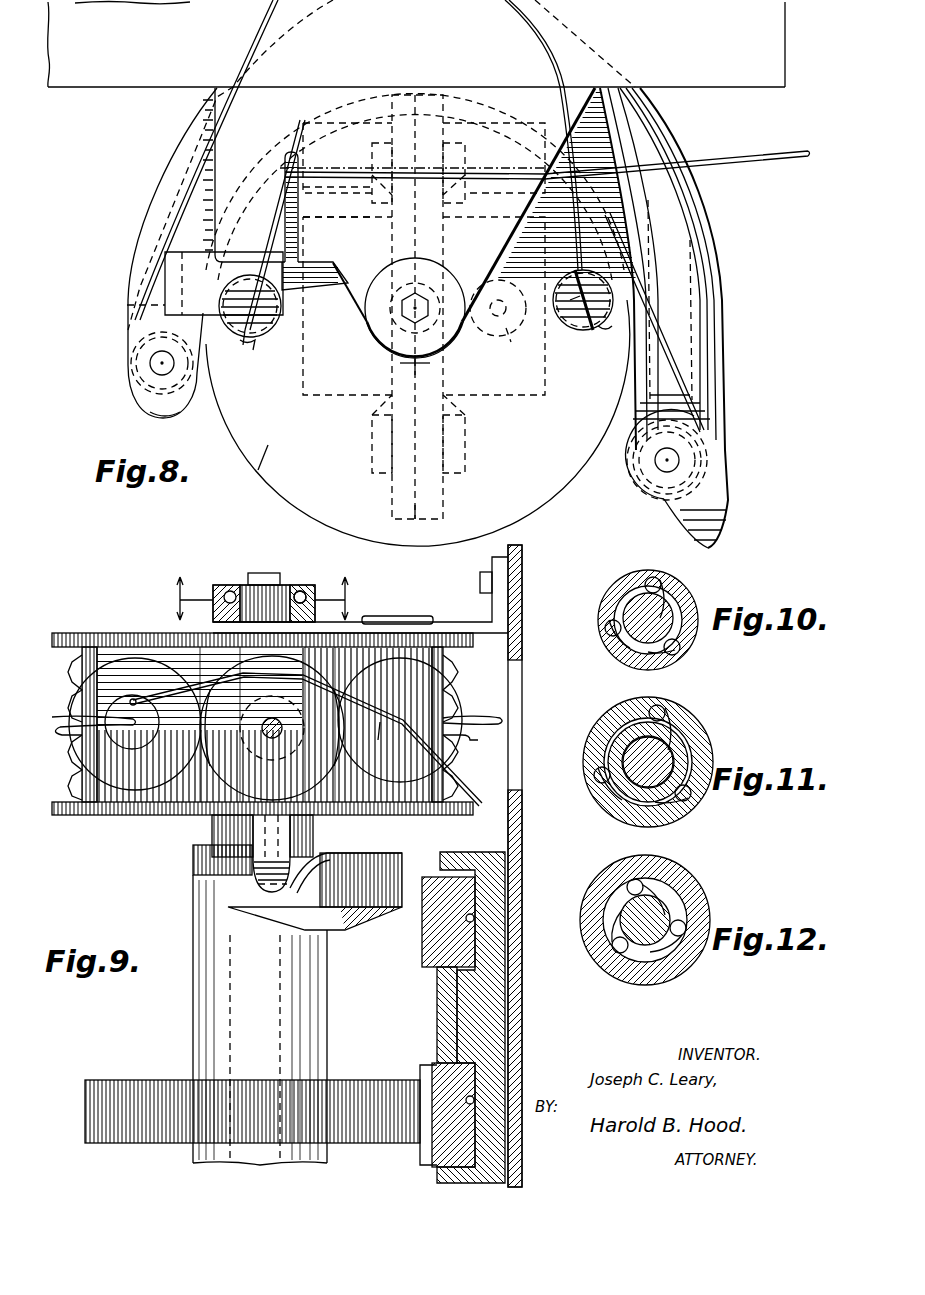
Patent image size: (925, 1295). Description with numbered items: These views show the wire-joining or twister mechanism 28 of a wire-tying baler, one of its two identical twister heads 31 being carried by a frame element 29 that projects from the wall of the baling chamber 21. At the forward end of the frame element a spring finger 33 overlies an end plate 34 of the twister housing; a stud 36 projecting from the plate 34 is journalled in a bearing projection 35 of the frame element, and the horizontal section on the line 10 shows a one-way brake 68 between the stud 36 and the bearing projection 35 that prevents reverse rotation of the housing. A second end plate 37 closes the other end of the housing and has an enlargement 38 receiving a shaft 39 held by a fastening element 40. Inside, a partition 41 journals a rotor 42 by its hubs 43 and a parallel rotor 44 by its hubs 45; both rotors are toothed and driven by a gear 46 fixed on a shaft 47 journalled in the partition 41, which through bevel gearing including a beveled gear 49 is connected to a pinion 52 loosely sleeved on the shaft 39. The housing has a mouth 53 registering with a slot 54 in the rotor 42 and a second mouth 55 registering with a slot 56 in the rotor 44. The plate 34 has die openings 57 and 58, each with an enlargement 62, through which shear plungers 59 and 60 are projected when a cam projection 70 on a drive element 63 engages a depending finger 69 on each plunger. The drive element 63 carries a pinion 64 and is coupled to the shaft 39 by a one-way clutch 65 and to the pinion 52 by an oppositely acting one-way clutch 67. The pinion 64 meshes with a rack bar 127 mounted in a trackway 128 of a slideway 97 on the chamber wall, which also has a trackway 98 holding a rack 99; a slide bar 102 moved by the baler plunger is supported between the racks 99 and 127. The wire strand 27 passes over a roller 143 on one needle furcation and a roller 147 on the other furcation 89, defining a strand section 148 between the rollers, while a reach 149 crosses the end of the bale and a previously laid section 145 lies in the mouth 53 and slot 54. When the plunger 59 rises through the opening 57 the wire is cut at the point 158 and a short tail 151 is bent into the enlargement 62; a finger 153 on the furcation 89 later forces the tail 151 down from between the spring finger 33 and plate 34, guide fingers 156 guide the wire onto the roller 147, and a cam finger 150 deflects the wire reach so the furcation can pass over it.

In FIG. 9, the section line 10 is at (262, 598).
In FIG. 8, the baling chamber 21 is at (782, 38).
In FIG. 9, the baling chamber 21 is at (523, 597).
In FIG. 8, the wire strand 27 is at (540, 50).
In FIG. 8, the wire-joining mechanism 28 is at (575, 474).
In FIG. 9, the wire-joining mechanism 28 is at (57, 596).
In FIG. 8, the frame element 29 is at (590, 122).
In FIG. 9, the frame element 29 is at (414, 615).
In FIG. 9, the twister head 31 is at (48, 804).
In FIG. 8, the spring finger 33 is at (214, 216).
In FIG. 8, the end plate 34 is at (255, 467).
In FIG. 9, the end plate 34 is at (128, 632).
In FIG. 8, the bearing projection 35 is at (415, 375).
In FIG. 9, the bearing projection 35 is at (215, 606).
In FIG. 10, the bearing projection 35 is at (692, 607).
In FIG. 8, the stud 36 is at (415, 258).
In FIG. 9, the stud 36 is at (280, 590).
In FIG. 10, the stud 36 is at (638, 598).
In FIG. 9, the second end plate 37 is at (140, 815).
In FIG. 9, the enlargement 38 is at (312, 828).
In FIG. 11, the shaft 39 is at (634, 748).
In FIG. 12, the shaft 39 is at (662, 942).
In FIG. 8, the fastening element 40 is at (482, 268).
In FIG. 8, the partition 41 is at (365, 244).
In FIG. 8, the rotor 42 is at (412, 94).
In FIG. 9, the rotor 42 is at (458, 700).
In FIG. 8, the hubs 43 is at (463, 154).
In FIG. 8, the rotor 44 is at (419, 520).
In FIG. 9, the rotor 44 is at (70, 690).
In FIG. 8, the hubs 45 is at (465, 456).
In FIG. 8, the gear 46 is at (400, 363).
In FIG. 9, the gear 46 is at (220, 781).
In FIG. 8, the shaft 47 is at (366, 318).
In FIG. 8, the beveled gear 49 is at (509, 346).
In FIG. 9, the pinion 52 is at (210, 857).
In FIG. 11, the pinion 52 is at (636, 735).
In FIG. 9, the mouth 53 is at (498, 716).
In FIG. 9, the rotor slot 54 is at (478, 740).
In FIG. 9, the mouth 55 is at (62, 718).
In FIG. 9, the rotor slot 56 is at (62, 735).
In FIG. 8, the die opening 57 is at (592, 276).
In FIG. 8, the die opening 58 is at (250, 352).
In FIG. 8, the shear plunger 59 is at (572, 308).
In FIG. 9, the shear plunger 59 is at (253, 823).
In FIG. 8, the shear plunger 60 is at (282, 318).
In FIG. 8, the enlargement 62 is at (618, 334).
In FIG. 9, the drive element 63 is at (328, 988).
In FIG. 11, the drive element 63 is at (708, 745).
In FIG. 12, the drive element 63 is at (678, 873).
In FIG. 9, the pinion 64 is at (140, 1079).
In FIG. 12, the one-way clutch 65 is at (630, 880).
In FIG. 11, the one-way clutch 67 is at (663, 712).
In FIG. 8, the one-way brake 68 is at (715, 300).
In FIG. 9, the one-way brake 68 is at (303, 596).
In FIG. 10, the one-way brake 68 is at (662, 585).
In FIG. 9, the depending finger 69 is at (270, 895).
In FIG. 9, the cam projection 70 is at (330, 853).
In FIG. 8, the needle furcation 89 is at (132, 253).
In FIG. 9, the slideway 97 is at (493, 1018).
In FIG. 9, the trackway 98 is at (474, 918).
In FIG. 9, the rack 99 is at (422, 928).
In FIG. 9, the slide bar 102 is at (440, 1008).
In FIG. 9, the rack bar 127 is at (436, 1065).
In FIG. 9, the trackway 128 is at (474, 1100).
In FIG. 8, the roller 143 is at (700, 463).
In FIG. 8, the strand section 145 is at (300, 182).
In FIG. 9, the strand section 145 is at (369, 741).
In FIG. 8, the roller 147 is at (127, 362).
In FIG. 8, the strand section 148 is at (492, 172).
In FIG. 9, the strand section 148 is at (410, 700).
In FIG. 8, the wire reach 149 is at (265, 33).
In FIG. 8, the cam finger 150 is at (722, 523).
In FIG. 8, the wire tail 151 is at (275, 200).
In FIG. 8, the finger 153 is at (280, 286).
In FIG. 8, the guide fingers 156 is at (172, 422).
In FIG. 8, the cutting point 158 is at (579, 262).